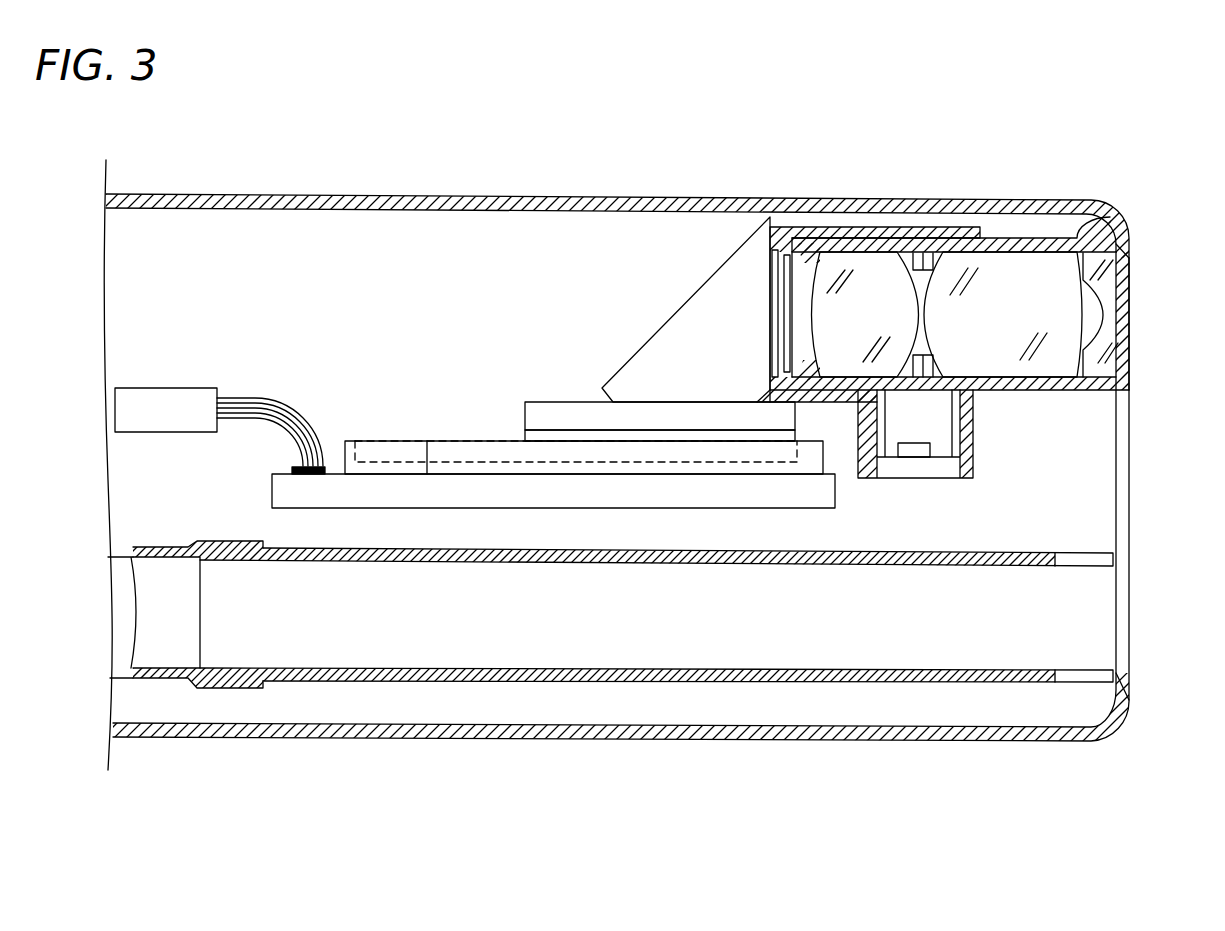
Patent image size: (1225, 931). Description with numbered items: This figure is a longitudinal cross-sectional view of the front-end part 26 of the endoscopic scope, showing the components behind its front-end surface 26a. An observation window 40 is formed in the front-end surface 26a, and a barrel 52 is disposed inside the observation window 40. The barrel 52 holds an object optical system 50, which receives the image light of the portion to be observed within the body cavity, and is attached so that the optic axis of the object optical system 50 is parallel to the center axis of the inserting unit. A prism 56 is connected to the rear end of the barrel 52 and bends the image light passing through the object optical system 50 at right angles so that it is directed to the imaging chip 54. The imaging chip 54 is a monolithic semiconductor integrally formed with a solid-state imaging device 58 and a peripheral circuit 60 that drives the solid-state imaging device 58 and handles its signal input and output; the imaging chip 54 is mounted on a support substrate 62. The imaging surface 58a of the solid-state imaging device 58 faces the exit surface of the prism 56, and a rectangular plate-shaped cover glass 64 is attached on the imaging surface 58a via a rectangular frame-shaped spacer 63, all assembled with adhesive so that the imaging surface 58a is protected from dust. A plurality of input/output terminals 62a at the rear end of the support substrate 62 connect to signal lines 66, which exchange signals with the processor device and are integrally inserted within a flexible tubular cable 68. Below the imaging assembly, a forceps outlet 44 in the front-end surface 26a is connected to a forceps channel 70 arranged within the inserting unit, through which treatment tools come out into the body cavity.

The front-end part 26 is at (638, 740).
The front-end surface 26a is at (1128, 698).
The observation window 40 is at (1131, 290).
The forceps outlet 44 is at (1131, 598).
The object optical system 50 is at (845, 252).
The barrel 52 is at (1110, 220).
The imaging chip 54 is at (372, 440).
The prism 56 is at (703, 283).
The solid-state imaging device 58 is at (770, 455).
The imaging surface 58a is at (643, 462).
The peripheral circuit 60 is at (427, 441).
The support substrate 62 is at (272, 479).
The input/output terminals 62a is at (293, 467).
The spacer 63 is at (525, 433).
The cover glass 64 is at (578, 403).
The signal lines 66 is at (257, 397).
The cable 68 is at (150, 389).
The forceps channel 70 is at (132, 550).